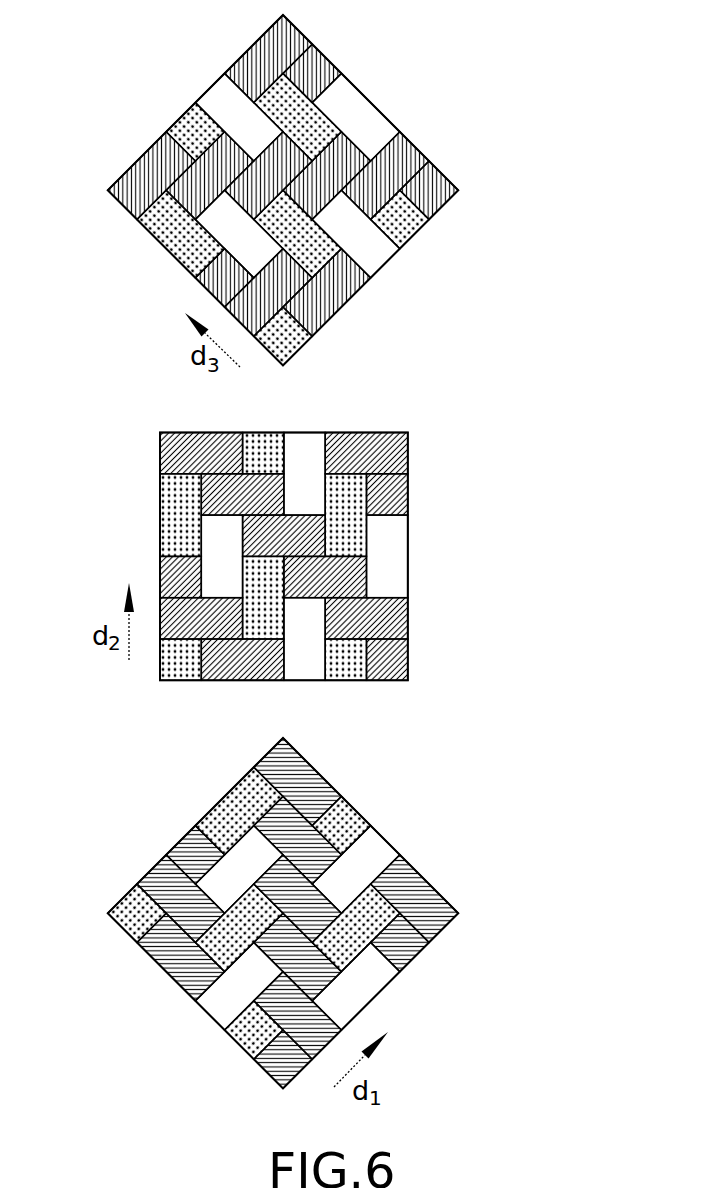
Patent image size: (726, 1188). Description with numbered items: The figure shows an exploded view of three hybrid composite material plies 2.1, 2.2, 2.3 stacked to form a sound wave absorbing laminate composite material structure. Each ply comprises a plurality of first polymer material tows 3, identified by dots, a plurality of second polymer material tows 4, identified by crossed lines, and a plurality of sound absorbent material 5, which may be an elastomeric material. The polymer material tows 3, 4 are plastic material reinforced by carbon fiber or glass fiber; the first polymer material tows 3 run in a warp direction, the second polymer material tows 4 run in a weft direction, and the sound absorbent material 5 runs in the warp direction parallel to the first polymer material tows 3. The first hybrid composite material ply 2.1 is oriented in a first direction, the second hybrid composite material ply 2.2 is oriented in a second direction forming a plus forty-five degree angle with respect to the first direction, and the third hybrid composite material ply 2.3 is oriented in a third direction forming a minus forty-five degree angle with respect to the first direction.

The first hybrid composite material ply 2.1 is at (466, 778).
The second hybrid composite material ply 2.2 is at (487, 478).
The third hybrid composite material ply 2.3 is at (159, 73).
The first polymer material tows 3 is at (154, 240).
The second polymer material tows 4 is at (408, 155).
The sound absorbent material 5 is at (375, 263).